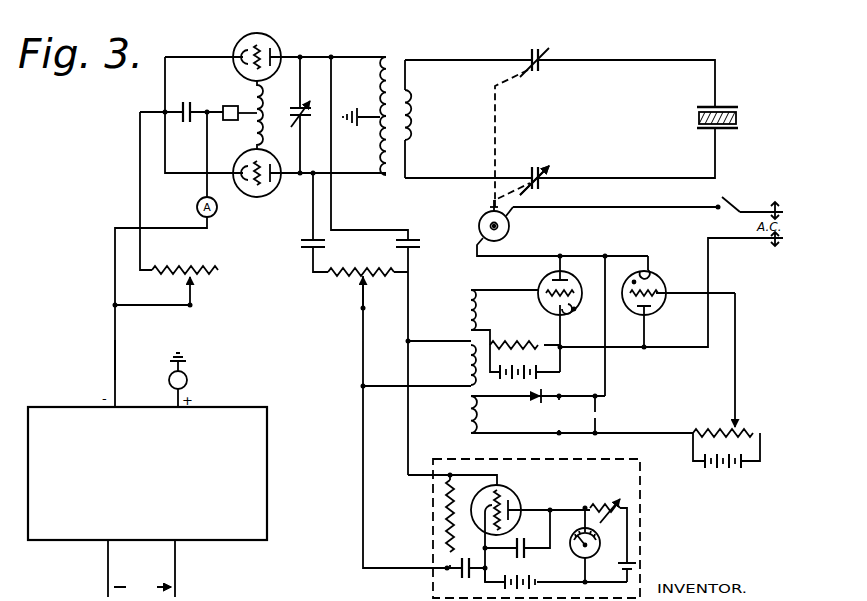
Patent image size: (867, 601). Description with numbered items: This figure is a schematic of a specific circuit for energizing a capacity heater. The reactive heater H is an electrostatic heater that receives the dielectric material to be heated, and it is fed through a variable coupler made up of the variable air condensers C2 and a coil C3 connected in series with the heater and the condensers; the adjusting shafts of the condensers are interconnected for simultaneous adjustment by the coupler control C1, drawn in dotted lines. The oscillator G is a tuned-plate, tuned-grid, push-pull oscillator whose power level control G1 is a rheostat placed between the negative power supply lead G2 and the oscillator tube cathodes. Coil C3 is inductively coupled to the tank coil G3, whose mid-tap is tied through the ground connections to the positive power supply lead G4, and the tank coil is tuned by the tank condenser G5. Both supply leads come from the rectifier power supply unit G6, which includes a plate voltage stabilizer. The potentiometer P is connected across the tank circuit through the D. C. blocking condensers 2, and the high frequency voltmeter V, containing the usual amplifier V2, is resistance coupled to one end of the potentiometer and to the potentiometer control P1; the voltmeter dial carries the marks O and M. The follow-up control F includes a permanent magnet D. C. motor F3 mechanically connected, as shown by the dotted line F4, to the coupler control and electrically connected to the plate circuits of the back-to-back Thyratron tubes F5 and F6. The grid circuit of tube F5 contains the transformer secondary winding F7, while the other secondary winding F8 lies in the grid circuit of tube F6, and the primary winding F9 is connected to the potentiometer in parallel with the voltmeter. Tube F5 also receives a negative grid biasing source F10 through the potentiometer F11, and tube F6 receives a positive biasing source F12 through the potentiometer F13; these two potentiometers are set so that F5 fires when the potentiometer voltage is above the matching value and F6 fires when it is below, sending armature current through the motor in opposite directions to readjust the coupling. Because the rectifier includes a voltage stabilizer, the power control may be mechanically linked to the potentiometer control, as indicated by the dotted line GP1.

The oscillator G is at (231, 51).
The power level control G1 is at (360, 296).
The negative power supply lead G2 is at (115, 370).
The tank coil G3 is at (385, 57).
The positive power supply lead G4 is at (178, 397).
The tank condenser G5 is at (292, 118).
The rectifier power supply unit G6 is at (238, 535).
The mechanical connection GP1 is at (266, 300).
The coupler control C1 is at (495, 146).
The variable air condensers C2 is at (533, 52).
The coil C3 is at (413, 97).
The reactive heater H is at (735, 108).
The follow-up control F is at (630, 254).
The motor F3 is at (510, 226).
The mechanical connection F4 is at (490, 207).
The Thyratron tube F5 is at (576, 277).
The Thyratron tube F6 is at (658, 283).
The secondary winding F7 is at (489, 310).
The secondary winding F8 is at (469, 415).
The primary winding F9 is at (470, 357).
The negative grid biasing source F10 is at (545, 368).
The potentiometer F11 is at (522, 342).
The positive biasing source F12 is at (725, 470).
The potentiometer F13 is at (742, 427).
The potentiometer P is at (340, 271).
The potentiometer control P1 is at (361, 309).
The D. C. blocking condensers 2 is at (299, 245).
The high frequency voltmeter V is at (561, 528).
The amplifier V2 is at (512, 493).
The mark M is at (569, 526).
The mark O is at (600, 532).